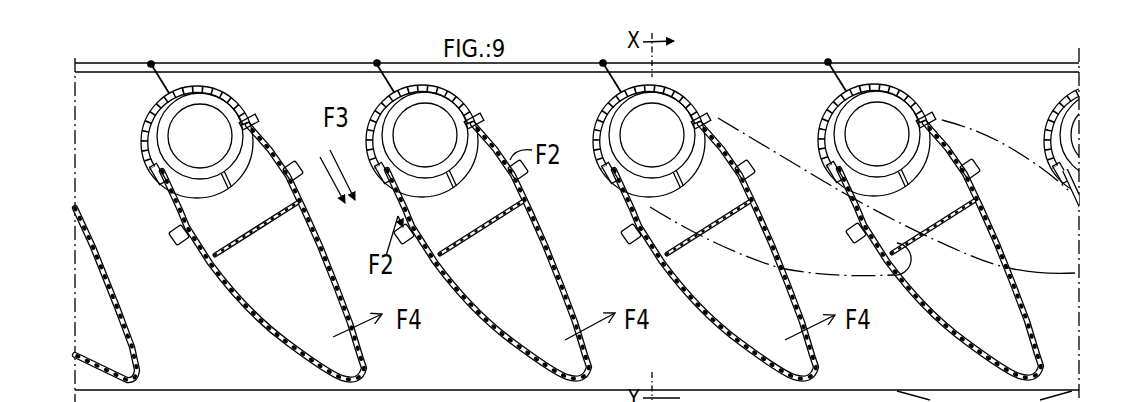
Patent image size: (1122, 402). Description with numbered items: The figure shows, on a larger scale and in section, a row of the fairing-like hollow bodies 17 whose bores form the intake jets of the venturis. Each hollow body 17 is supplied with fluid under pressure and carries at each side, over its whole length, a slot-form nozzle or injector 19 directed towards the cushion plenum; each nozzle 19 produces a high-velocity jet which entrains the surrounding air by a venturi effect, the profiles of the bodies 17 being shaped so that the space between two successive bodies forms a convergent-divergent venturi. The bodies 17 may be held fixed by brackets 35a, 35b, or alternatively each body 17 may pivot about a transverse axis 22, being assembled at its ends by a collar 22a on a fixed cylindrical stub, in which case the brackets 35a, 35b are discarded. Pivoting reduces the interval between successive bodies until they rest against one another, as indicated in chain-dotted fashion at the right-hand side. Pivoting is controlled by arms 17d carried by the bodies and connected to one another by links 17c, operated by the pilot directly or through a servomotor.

The hollow body 17 is at (497, 60).
The link 17c is at (290, 64).
The arm 17d is at (377, 63).
The nozzle or injector 19 is at (574, 179).
The transverse axis 22 is at (535, 141).
The collar 22a is at (538, 161).
The bracket 35a is at (511, 264).
The bracket 35b is at (632, 203).